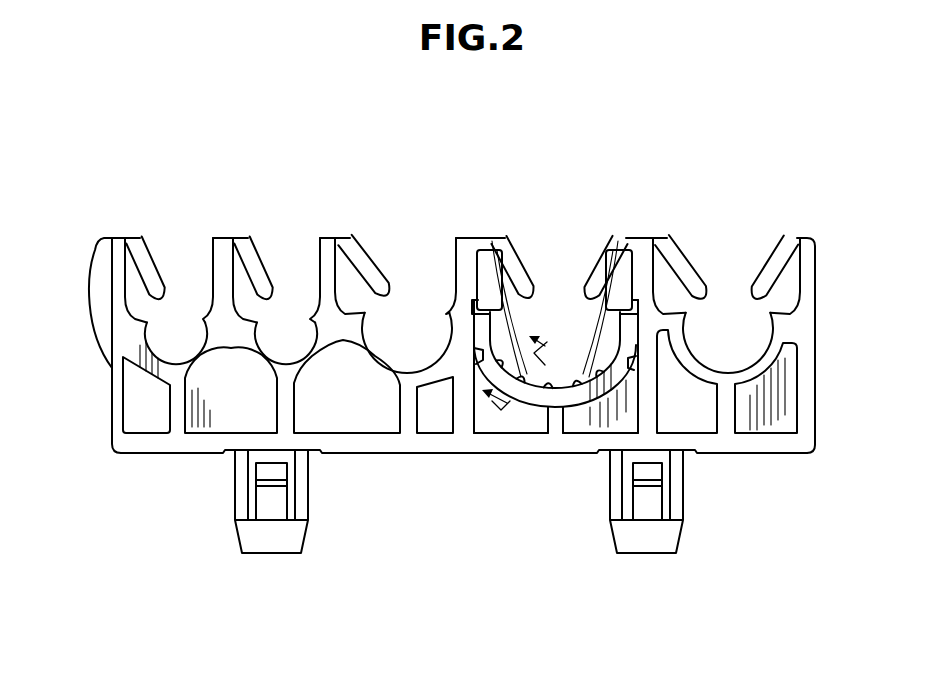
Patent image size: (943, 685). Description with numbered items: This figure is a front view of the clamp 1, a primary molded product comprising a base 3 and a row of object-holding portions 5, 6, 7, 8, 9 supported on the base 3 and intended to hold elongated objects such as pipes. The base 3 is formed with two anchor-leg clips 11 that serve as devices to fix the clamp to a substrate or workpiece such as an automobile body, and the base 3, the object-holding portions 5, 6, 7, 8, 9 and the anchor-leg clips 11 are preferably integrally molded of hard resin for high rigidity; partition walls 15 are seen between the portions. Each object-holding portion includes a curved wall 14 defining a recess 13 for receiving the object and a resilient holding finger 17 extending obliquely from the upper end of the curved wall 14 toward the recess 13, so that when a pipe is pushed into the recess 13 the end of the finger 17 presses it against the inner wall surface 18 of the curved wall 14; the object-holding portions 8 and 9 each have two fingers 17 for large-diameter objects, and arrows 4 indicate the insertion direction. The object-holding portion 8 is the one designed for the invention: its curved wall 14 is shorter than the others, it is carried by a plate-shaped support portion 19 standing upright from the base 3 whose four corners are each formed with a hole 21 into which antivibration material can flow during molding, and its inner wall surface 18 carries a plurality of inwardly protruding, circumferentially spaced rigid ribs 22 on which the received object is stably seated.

The clamp (tube holder) 1 is at (849, 288).
The base 3 is at (803, 441).
The direction of insertion 4 is at (523, 385).
The object-holding portion 5 is at (181, 260).
The object-holding portion 6 is at (290, 260).
The object-holding portion 7 is at (411, 260).
The object-holding portion 8 is at (546, 260).
The object-holding portion 9 is at (719, 273).
The anchor-leg clip 11 is at (235, 518).
The recess 13 is at (164, 338).
The curved wall 14 is at (130, 345).
The partition wall 15 is at (113, 235).
The resilient holding finger 17 is at (137, 241).
The inner wall surface 18 is at (579, 410).
The support portion 19 is at (574, 410).
The hole 21 is at (478, 355).
The rigid rib 22 is at (490, 228).